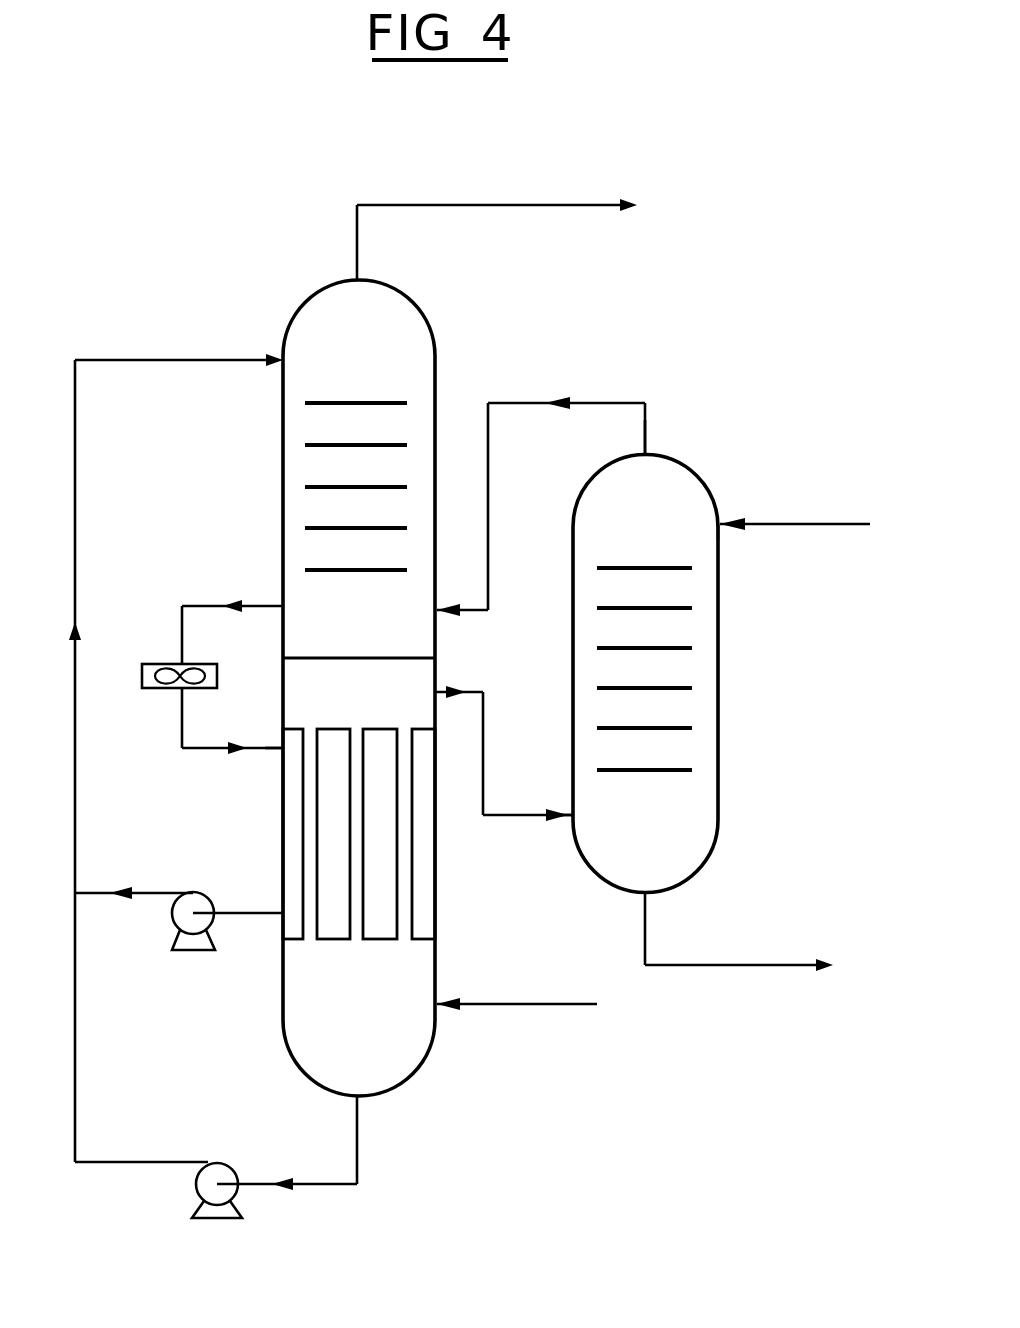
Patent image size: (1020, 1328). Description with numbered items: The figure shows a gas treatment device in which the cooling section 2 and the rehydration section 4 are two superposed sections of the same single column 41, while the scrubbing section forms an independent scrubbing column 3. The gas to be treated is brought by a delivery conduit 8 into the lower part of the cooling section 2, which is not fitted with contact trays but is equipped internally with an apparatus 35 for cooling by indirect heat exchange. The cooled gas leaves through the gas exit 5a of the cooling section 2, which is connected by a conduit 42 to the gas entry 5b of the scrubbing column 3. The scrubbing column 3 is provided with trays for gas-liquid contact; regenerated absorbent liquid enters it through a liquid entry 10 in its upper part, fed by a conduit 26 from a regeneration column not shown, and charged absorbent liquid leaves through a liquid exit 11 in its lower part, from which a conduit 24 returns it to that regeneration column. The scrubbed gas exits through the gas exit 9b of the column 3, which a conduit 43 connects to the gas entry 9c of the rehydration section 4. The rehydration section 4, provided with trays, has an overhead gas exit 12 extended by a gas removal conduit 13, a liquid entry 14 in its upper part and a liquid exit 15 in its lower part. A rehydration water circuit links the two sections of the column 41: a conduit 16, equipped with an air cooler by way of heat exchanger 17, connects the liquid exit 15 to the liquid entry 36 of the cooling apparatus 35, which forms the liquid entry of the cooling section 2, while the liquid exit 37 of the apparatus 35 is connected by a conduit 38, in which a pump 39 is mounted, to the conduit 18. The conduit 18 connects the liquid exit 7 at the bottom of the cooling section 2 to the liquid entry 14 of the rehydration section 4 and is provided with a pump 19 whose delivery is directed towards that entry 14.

The single column 41 is at (306, 280).
The rehydration section 4 is at (292, 462).
The cooling section 2 is at (307, 1023).
The apparatus for cooling by indirect heat exchange 35 is at (424, 910).
The overhead gas exit 12 is at (358, 278).
The gas removal conduit 13 is at (493, 203).
The liquid entry 14 is at (283, 365).
The conduit 18 is at (75, 689).
The liquid exit 15 is at (283, 605).
The heat exchanger 17 is at (150, 663).
The conduit 16 is at (193, 749).
The liquid entry 36 is at (283, 749).
The liquid exit 37 is at (283, 912).
The conduit 38 is at (100, 894).
The pump 39 is at (190, 951).
The liquid exit 7 is at (359, 1098).
The pump 19 is at (197, 1184).
The delivery conduit 8 is at (549, 1004).
The gas entry 9c is at (440, 607).
The conduit 43 is at (520, 403).
The gas exit 5a is at (438, 692).
The conduit 42 is at (484, 745).
The gas entry 5b is at (568, 818).
The scrubbing column 3 is at (720, 750).
The gas exit 9b is at (647, 455).
The conduit 26 is at (809, 523).
The liquid entry 10 is at (720, 524).
The liquid exit 11 is at (648, 894).
The conduit 24 is at (755, 966).